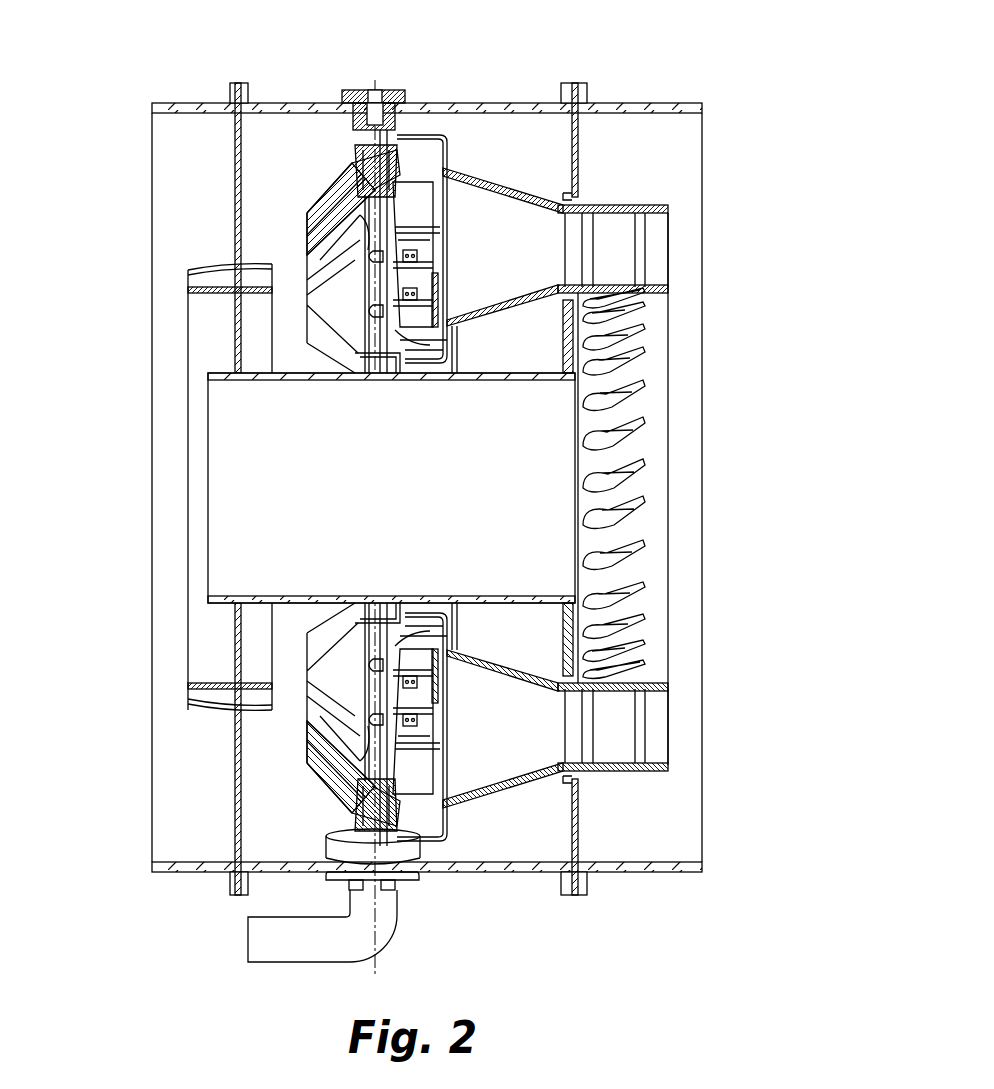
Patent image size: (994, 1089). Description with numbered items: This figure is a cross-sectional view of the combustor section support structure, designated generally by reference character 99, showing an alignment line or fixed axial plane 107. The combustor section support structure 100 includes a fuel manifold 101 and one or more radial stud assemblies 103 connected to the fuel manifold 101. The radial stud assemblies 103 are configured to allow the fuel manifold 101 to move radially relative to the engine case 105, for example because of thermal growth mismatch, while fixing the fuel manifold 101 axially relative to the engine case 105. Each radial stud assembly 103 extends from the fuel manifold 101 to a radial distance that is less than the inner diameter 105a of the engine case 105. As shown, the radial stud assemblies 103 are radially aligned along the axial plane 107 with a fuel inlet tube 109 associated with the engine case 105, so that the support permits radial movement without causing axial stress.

The combustor section support structure 99 is at (62, 81).
The combustor section support structure 100 is at (405, 78).
The fuel manifold 101 is at (330, 195).
The radial stud assembly 103 is at (370, 128).
The engine case 105 is at (273, 107).
The inner diameter 105a is at (185, 812).
The axial plane 107 is at (375, 508).
The fuel inlet tube 109 is at (375, 857).